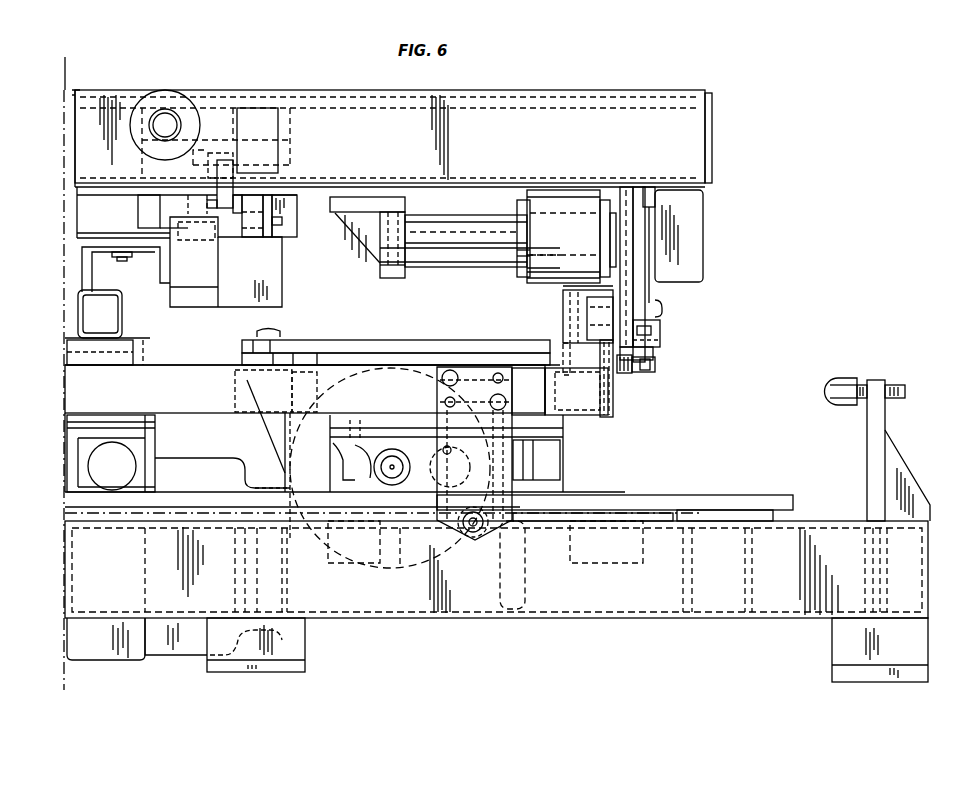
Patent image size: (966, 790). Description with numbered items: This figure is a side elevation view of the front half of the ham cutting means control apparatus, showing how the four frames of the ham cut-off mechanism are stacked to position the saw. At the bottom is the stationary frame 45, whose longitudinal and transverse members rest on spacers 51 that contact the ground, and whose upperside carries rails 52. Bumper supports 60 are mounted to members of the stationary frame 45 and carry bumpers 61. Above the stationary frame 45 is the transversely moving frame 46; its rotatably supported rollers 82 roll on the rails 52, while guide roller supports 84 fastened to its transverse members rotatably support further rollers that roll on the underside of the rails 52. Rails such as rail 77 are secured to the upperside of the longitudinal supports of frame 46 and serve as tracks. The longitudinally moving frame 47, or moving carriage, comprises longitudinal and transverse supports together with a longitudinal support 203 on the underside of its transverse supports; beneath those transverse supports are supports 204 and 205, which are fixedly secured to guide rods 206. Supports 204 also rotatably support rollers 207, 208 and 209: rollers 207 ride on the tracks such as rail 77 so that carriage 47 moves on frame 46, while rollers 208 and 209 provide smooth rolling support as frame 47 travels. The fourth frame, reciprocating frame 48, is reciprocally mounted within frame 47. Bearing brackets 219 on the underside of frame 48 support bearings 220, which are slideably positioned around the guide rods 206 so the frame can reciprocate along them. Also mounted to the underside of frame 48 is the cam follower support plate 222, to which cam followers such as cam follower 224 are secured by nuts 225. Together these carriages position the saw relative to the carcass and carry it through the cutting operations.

The stationary frame 45 is at (598, 597).
The transversely moving frame 46 is at (584, 422).
The longitudinally moving frame 47 is at (692, 165).
The reciprocating frame 48 is at (648, 108).
The spacers 51 is at (305, 663).
The rails 52 is at (688, 503).
The bumper supports 60 is at (873, 418).
The bumpers 61 is at (843, 392).
The rail 77 is at (613, 344).
The rollers 82 is at (102, 473).
The guide roller supports 84 is at (85, 428).
The longitudinal support 203 is at (692, 263).
The support 204 is at (625, 217).
The support 205 is at (367, 230).
The guide rods 206 is at (468, 252).
The rollers 207 is at (597, 315).
The roller 208 is at (626, 368).
The roller 209 is at (650, 347).
The bearing bracket 219 is at (547, 245).
The bearing 220 is at (517, 213).
The cam follower support plate 222 is at (137, 188).
The cam follower 224 is at (230, 213).
The nuts 225 is at (222, 165).